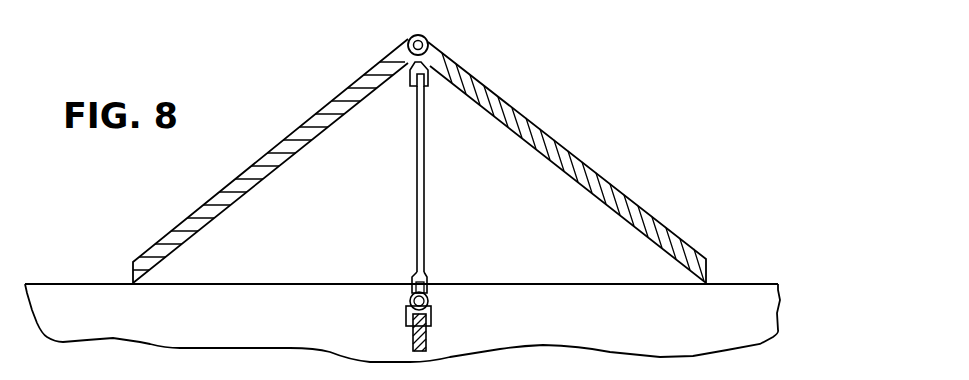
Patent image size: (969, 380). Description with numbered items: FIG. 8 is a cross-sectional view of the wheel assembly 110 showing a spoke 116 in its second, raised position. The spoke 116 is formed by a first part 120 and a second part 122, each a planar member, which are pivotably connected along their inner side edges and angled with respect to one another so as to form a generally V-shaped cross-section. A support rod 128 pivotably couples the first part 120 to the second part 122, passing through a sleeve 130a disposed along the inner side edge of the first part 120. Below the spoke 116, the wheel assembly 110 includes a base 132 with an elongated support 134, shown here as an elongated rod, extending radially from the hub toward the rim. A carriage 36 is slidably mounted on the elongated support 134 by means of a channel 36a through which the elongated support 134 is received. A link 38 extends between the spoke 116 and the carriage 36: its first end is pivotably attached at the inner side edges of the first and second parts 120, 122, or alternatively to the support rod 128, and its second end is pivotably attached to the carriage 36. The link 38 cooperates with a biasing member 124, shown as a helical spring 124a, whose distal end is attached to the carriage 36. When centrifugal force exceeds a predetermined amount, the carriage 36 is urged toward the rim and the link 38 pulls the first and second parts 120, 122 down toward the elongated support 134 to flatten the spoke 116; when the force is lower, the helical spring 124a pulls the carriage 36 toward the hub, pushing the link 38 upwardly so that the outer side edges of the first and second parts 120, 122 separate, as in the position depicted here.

The wheel assembly 110 is at (616, 102).
The spoke 116 is at (588, 72).
The first part 120 is at (338, 93).
The second part 122 is at (503, 97).
The support rod 128 is at (421, 35).
The sleeve 130a is at (416, 35).
The link 38 is at (424, 150).
The biasing member 124 is at (473, 267).
The helical spring 124a is at (431, 313).
The carriage 36 is at (436, 306).
The channel 36a is at (406, 318).
The base 132 is at (470, 333).
The elongated support 134 is at (427, 338).